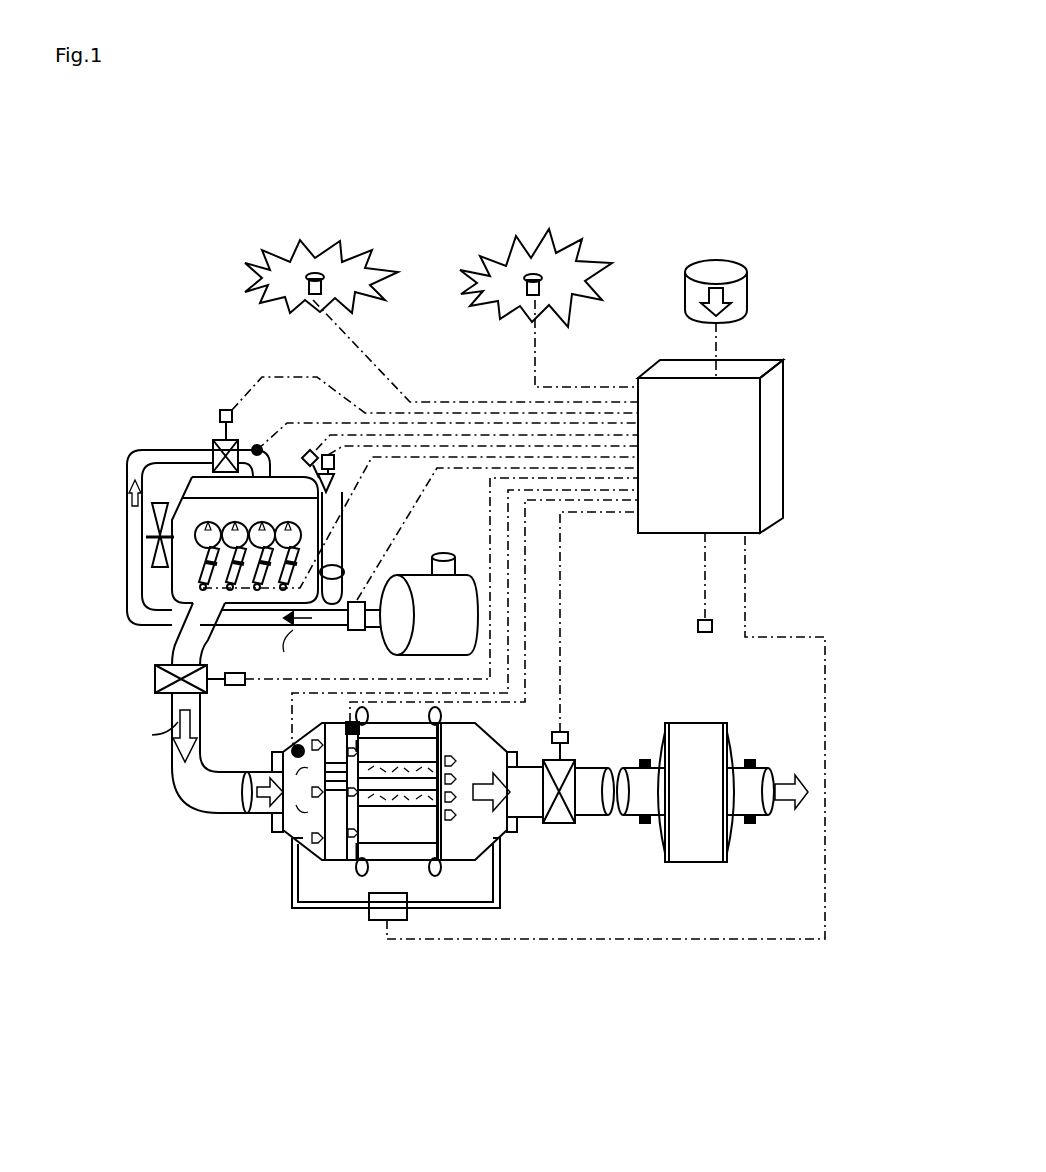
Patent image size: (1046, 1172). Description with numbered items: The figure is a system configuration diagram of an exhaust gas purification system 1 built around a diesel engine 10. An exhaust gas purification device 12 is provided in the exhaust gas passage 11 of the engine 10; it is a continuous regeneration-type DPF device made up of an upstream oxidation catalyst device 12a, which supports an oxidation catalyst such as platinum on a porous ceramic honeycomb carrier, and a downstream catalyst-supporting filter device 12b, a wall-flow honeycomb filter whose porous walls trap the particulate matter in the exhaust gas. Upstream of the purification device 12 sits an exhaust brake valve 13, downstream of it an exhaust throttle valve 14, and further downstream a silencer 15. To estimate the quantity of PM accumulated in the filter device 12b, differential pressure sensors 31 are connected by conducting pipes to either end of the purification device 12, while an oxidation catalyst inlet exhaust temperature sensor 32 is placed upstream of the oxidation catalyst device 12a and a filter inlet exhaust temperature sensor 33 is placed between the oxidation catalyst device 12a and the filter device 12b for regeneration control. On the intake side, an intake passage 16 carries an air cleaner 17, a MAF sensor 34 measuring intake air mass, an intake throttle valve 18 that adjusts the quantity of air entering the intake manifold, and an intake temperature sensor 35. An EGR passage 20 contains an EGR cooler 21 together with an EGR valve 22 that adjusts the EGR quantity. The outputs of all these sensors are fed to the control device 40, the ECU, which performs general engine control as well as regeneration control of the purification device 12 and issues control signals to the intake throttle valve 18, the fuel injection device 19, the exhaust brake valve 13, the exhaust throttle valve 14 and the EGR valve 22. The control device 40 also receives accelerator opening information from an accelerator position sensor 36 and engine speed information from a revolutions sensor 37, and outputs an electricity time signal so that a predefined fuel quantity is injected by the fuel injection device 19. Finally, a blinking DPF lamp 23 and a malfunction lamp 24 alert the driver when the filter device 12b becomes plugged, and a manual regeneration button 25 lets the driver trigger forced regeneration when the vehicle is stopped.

The exhaust gas purification system 1 is at (672, 229).
The diesel engine 10 is at (226, 498).
The exhaust gas passage 11 is at (202, 738).
The exhaust gas purification device 12 is at (377, 822).
The oxidation catalyst device 12a is at (322, 862).
The catalyst-supporting filter device 12b is at (402, 862).
The exhaust brake valve 13 is at (146, 699).
The exhaust throttle valve 14 is at (572, 755).
The silencer 15 is at (712, 756).
The intake passage 16 is at (187, 561).
The air cleaner 17 is at (485, 604).
The intake throttle valve 18 is at (207, 417).
The fuel injection device 19 is at (181, 556).
The EGR passage 20 is at (351, 434).
The EGR cooler 21 is at (366, 540).
The EGR valve 22 is at (284, 409).
The blinking lamp 23 is at (321, 235).
The malfunction lamp 24 is at (536, 242).
The manual regeneration button 25 is at (725, 240).
The differential pressure sensors 31 is at (381, 947).
The oxidation catalyst inlet exhaust temperature sensor 32 is at (267, 725).
The filter inlet exhaust temperature sensor 33 is at (334, 751).
The MAF sensor 34 is at (357, 584).
The intake temperature sensor 35 is at (237, 404).
The accelerator position sensor 36 is at (695, 660).
The revolutions sensor 37 is at (314, 401).
The control device 40 is at (751, 446).